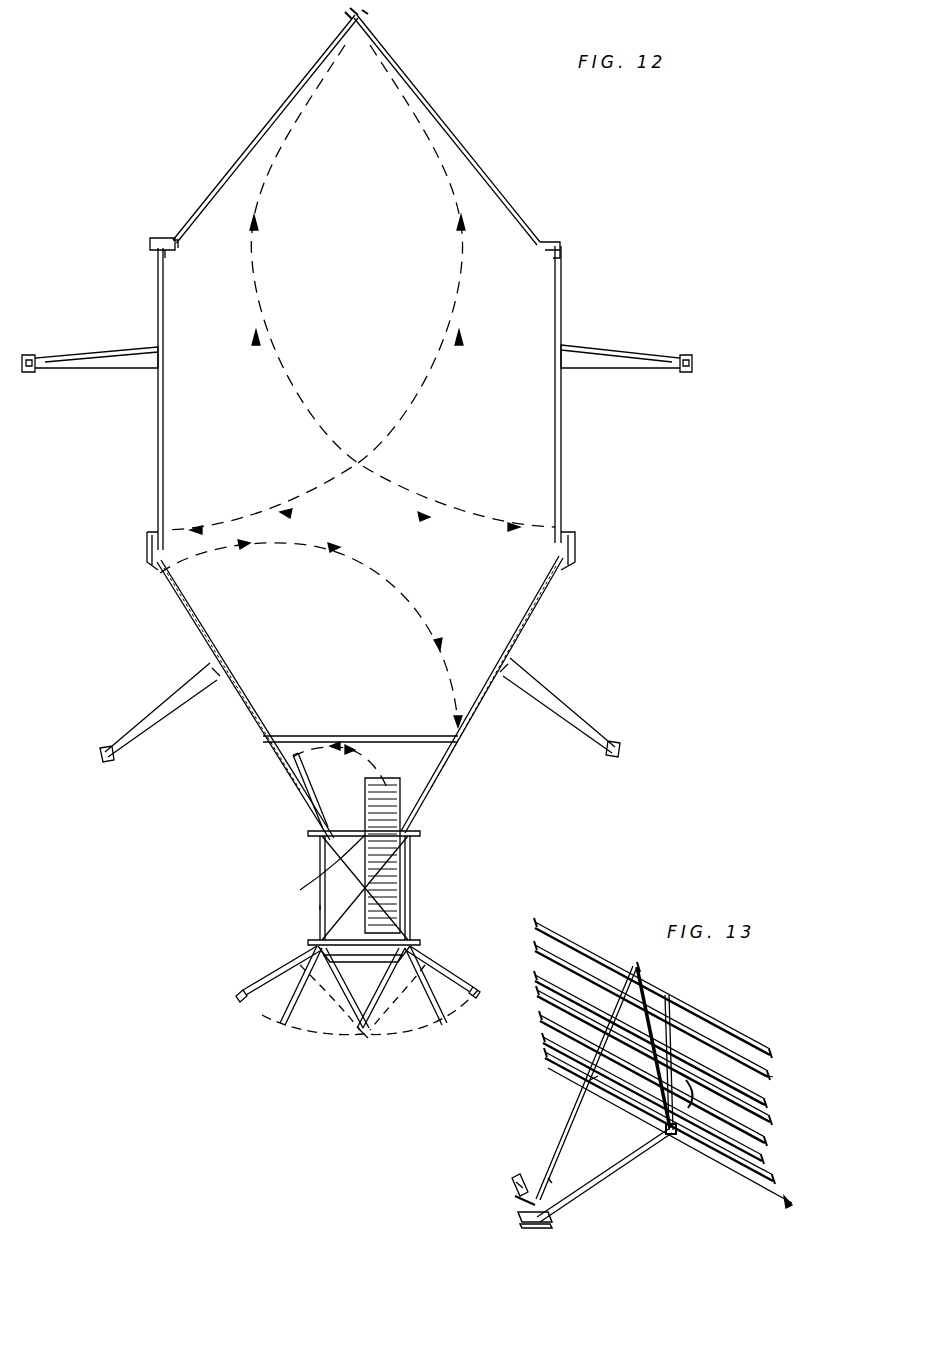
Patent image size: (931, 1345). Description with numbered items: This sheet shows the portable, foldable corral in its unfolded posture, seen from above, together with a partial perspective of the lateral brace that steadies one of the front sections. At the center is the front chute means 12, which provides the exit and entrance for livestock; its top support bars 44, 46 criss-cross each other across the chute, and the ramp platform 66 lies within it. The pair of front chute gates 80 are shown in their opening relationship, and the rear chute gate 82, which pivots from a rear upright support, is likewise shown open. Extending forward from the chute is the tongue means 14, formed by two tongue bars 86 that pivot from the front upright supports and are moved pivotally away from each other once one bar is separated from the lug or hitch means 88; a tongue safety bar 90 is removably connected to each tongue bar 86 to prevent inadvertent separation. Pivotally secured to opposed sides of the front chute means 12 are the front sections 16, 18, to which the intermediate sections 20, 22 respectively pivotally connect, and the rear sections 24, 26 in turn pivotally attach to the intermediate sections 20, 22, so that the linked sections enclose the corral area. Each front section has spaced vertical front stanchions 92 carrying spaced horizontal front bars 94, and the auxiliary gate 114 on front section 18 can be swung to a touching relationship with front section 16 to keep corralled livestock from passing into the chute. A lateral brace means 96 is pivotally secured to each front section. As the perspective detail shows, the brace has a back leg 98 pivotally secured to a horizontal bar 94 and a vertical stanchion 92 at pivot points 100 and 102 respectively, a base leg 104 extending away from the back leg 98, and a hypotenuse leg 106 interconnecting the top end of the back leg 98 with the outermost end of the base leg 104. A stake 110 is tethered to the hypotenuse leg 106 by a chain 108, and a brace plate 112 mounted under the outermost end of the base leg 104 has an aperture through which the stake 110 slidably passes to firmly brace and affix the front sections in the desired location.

In FIG. 12, the front chute means 12 is at (312, 905).
In FIG. 12, the tongue means 14 is at (375, 1035).
In FIG. 12, the front section 16 is at (483, 738).
In FIG. 12, the front section 18 is at (262, 757).
In FIG. 13, the front section 18 is at (766, 1075).
In FIG. 12, the intermediate section 20 is at (563, 440).
In FIG. 12, the intermediate section 22 is at (160, 448).
In FIG. 12, the rear section 24 is at (465, 135).
In FIG. 12, the rear section 26 is at (246, 150).
In FIG. 12, the top support bar 44 is at (322, 920).
In FIG. 12, the top support bar 46 is at (395, 882).
In FIG. 12, the platform 66 is at (322, 866).
In FIG. 12, the front chute gate 80 is at (430, 972).
In FIG. 12, the rear chute gate 82 is at (315, 800).
In FIG. 12, the tongue bar 86 is at (470, 985).
In FIG. 12, the lug or hitch means 88 is at (478, 990).
In FIG. 12, the tongue safety bar 90 is at (366, 963).
In FIG. 13, the vertical front stanchion 92 is at (690, 1105).
In FIG. 13, the horizontal front bar 94 is at (745, 1038).
In FIG. 12, the lateral brace means 96 is at (620, 335).
In FIG. 13, the lateral brace means 96 is at (672, 1040).
In FIG. 13, the back leg 98 is at (670, 1000).
In FIG. 13, the pivot point 100 is at (637, 967).
In FIG. 13, the pivot point 102 is at (680, 1142).
In FIG. 13, the base leg 104 is at (578, 1190).
In FIG. 13, the hypotenuse leg 106 is at (590, 1080).
In FIG. 13, the chain 108 is at (545, 1185).
In FIG. 13, the stake 110 is at (518, 1185).
In FIG. 13, the brace plate 112 is at (523, 1226).
In FIG. 12, the auxiliary gate 114 is at (356, 733).